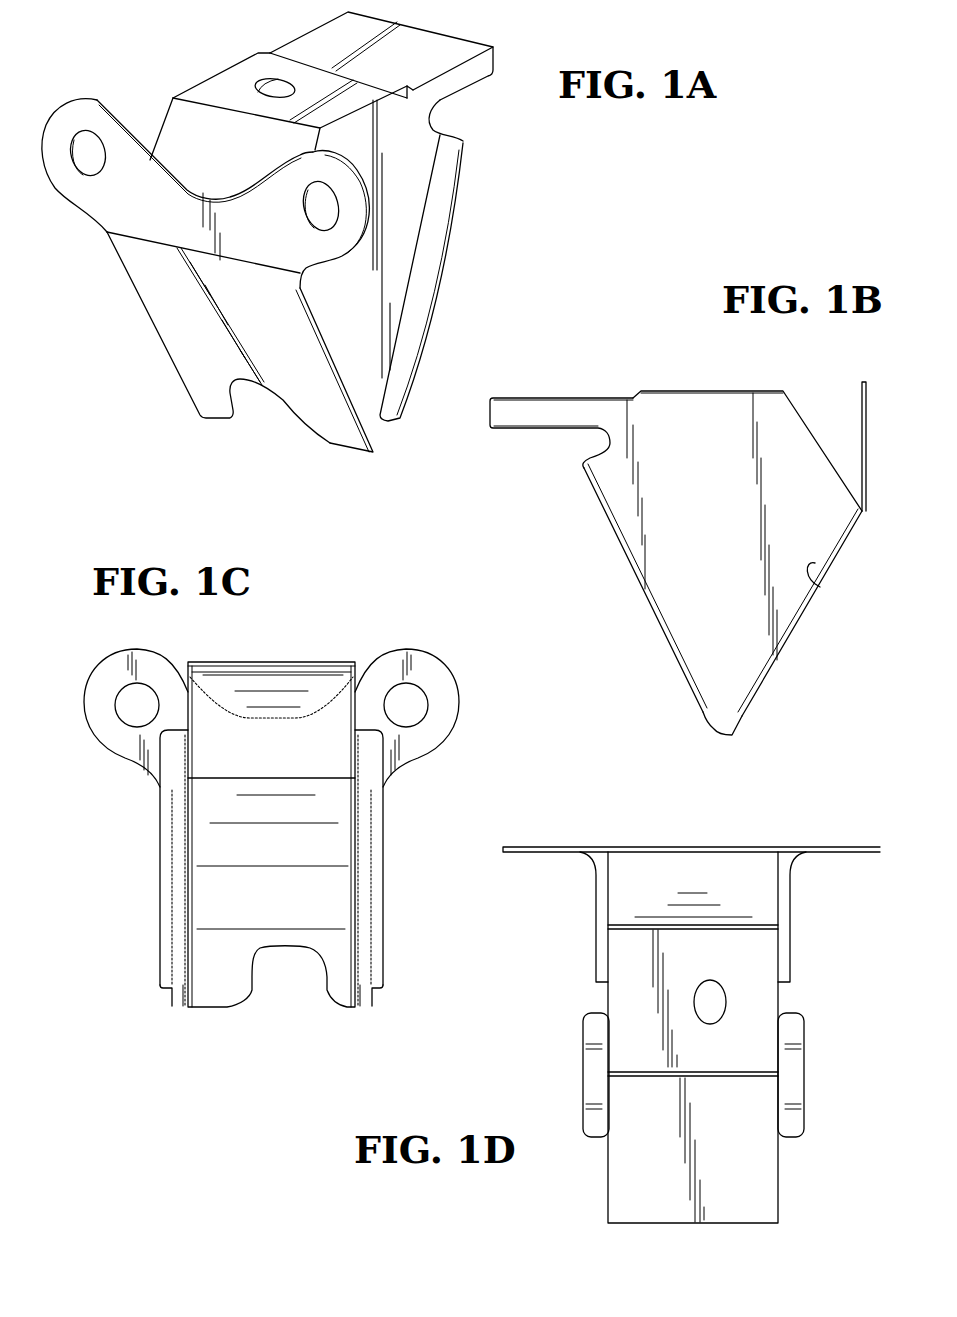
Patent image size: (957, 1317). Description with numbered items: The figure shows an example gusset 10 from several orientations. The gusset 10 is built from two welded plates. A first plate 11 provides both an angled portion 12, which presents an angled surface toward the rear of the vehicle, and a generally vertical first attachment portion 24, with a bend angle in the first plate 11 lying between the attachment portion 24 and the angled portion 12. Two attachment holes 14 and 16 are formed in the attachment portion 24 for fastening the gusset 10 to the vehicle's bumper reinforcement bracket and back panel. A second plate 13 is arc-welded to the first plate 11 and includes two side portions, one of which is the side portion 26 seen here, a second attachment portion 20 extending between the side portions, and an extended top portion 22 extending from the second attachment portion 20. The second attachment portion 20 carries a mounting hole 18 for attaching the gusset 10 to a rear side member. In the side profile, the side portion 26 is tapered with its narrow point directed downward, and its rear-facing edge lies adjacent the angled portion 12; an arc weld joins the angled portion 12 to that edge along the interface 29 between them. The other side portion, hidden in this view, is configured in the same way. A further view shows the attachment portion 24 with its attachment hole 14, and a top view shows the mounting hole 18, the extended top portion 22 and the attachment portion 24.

In FIG. 1A, the gusset 10 is at (503, 213).
In FIG. 1A, the first plate 11 is at (315, 417).
In FIG. 1A, the angled portion 12 is at (163, 277).
In FIG. 1B, the angled portion 12 is at (784, 644).
In FIG. 1A, the second plate 13 is at (370, 418).
In FIG. 1A, the attachment hole 14 is at (88, 140).
In FIG. 1C, the attachment hole 14 is at (147, 685).
In FIG. 1A, the attachment hole 16 is at (332, 200).
In FIG. 1A, the mounting hole 18 is at (268, 92).
In FIG. 1D, the mounting hole 18 is at (727, 1000).
In FIG. 1A, the second attachment portion 20 is at (208, 93).
In FIG. 1B, the second attachment portion 20 is at (740, 389).
In FIG. 1A, the extended top portion 22 is at (455, 48).
In FIG. 1B, the extended top portion 22 is at (578, 396).
In FIG. 1D, the extended top portion 22 is at (760, 1192).
In FIG. 1A, the first attachment portion 24 is at (107, 203).
In FIG. 1B, the first attachment portion 24 is at (866, 452).
In FIG. 1C, the first attachment portion 24 is at (133, 752).
In FIG. 1D, the first attachment portion 24 is at (790, 845).
In FIG. 1B, the side portion 26 is at (687, 589).
In FIG. 1C, the side portion 26 is at (358, 916).
In FIG. 1B, the interface 29 is at (815, 563).